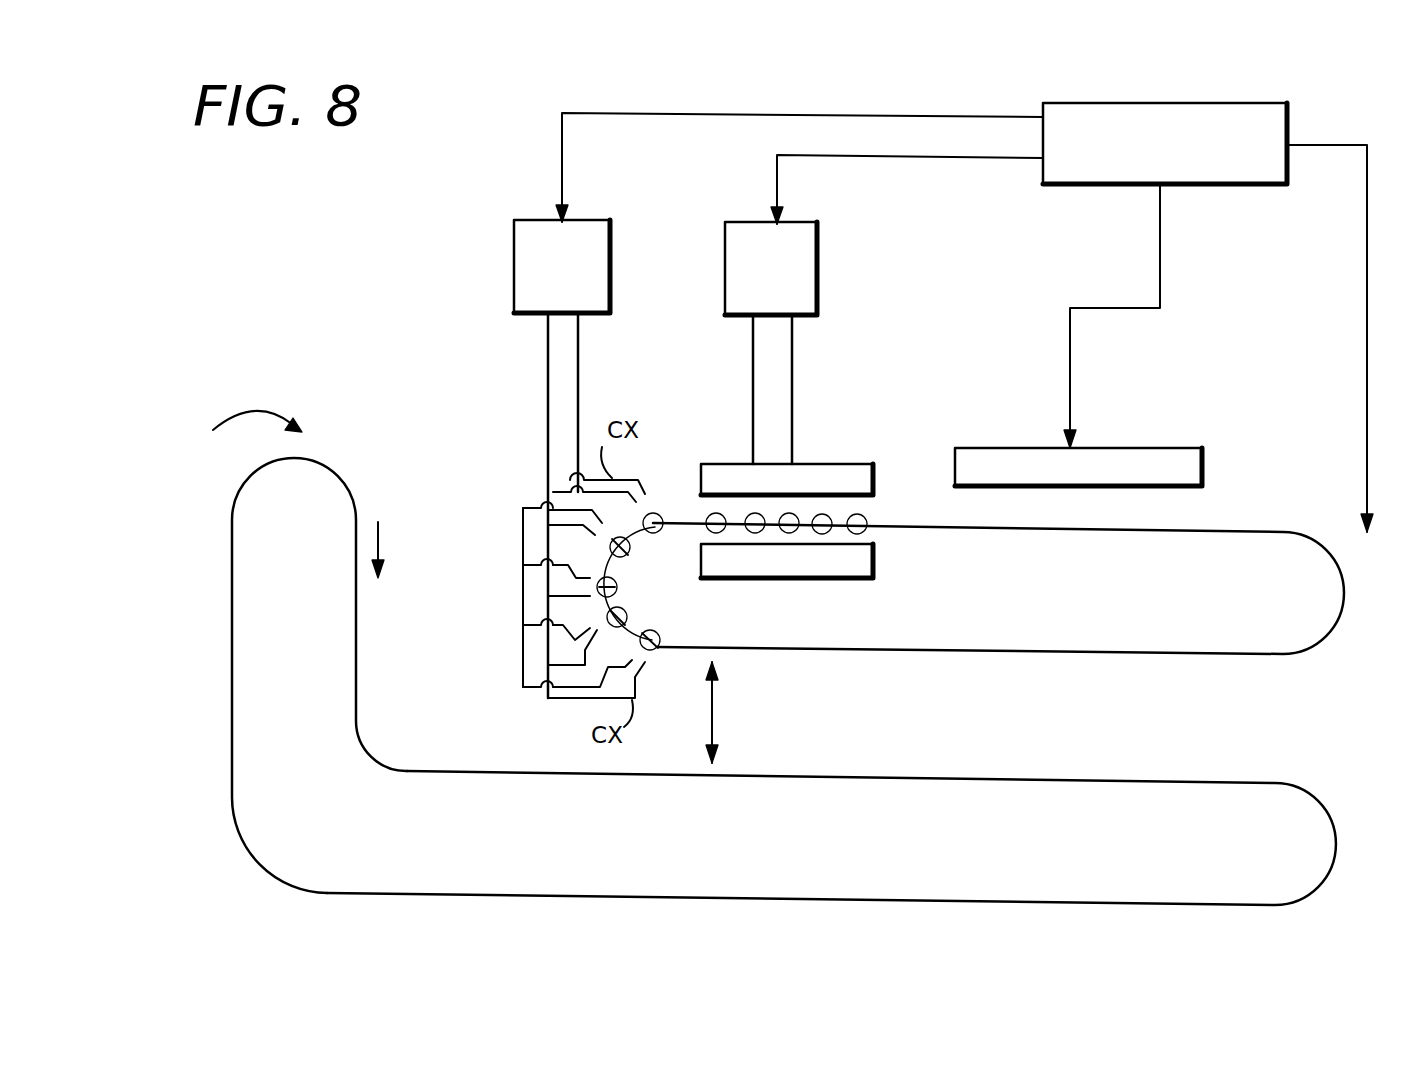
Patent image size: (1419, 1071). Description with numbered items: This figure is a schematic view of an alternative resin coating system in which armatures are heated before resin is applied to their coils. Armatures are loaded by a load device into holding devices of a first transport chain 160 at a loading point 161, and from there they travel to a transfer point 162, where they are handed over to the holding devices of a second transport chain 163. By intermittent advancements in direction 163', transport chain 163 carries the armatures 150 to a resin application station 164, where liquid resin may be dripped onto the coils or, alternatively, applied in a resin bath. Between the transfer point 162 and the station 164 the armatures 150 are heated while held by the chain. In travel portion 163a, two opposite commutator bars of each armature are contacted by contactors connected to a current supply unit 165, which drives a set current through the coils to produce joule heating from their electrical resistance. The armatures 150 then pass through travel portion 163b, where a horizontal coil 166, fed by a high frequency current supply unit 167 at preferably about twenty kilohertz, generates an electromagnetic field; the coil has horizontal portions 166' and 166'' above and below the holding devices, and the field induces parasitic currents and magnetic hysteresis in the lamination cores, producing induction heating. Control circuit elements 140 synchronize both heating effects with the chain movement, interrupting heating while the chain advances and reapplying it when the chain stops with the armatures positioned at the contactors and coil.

The control circuit elements 140 is at (1235, 103).
The armatures 150 is at (710, 522).
The first transport chain 160 is at (356, 620).
The loading point 161 is at (348, 402).
The transfer point 162 is at (878, 778).
The transport chain 163 is at (974, 619).
The travel portion 163a is at (676, 585).
The travel portion 163b is at (900, 561).
The advancement direction 163' is at (844, 694).
The resin application station 164 is at (1160, 448).
The current supply unit 165 is at (610, 255).
The horizontal coil 166 is at (835, 454).
The upper horizontal coil portion 166' is at (793, 451).
The lower horizontal coil portion 166'' is at (804, 582).
The high frequency current supply unit 167 is at (817, 265).